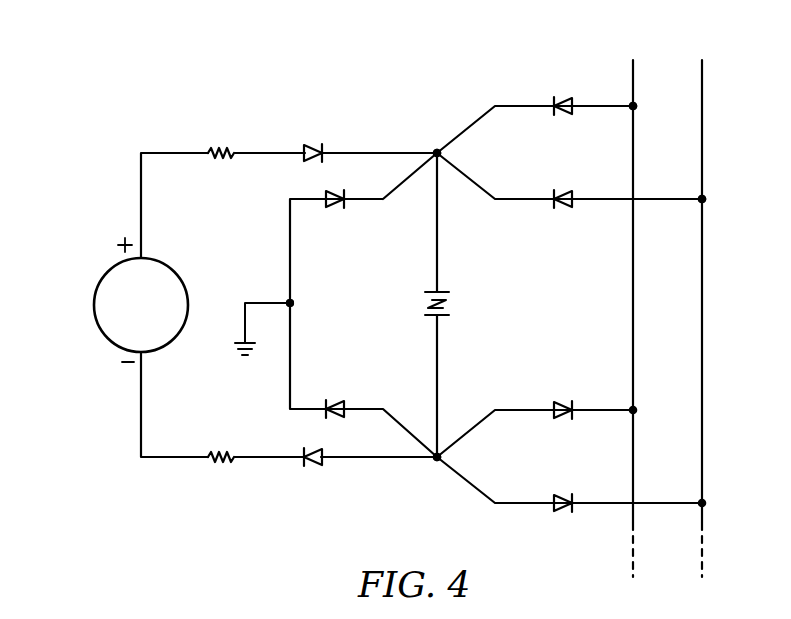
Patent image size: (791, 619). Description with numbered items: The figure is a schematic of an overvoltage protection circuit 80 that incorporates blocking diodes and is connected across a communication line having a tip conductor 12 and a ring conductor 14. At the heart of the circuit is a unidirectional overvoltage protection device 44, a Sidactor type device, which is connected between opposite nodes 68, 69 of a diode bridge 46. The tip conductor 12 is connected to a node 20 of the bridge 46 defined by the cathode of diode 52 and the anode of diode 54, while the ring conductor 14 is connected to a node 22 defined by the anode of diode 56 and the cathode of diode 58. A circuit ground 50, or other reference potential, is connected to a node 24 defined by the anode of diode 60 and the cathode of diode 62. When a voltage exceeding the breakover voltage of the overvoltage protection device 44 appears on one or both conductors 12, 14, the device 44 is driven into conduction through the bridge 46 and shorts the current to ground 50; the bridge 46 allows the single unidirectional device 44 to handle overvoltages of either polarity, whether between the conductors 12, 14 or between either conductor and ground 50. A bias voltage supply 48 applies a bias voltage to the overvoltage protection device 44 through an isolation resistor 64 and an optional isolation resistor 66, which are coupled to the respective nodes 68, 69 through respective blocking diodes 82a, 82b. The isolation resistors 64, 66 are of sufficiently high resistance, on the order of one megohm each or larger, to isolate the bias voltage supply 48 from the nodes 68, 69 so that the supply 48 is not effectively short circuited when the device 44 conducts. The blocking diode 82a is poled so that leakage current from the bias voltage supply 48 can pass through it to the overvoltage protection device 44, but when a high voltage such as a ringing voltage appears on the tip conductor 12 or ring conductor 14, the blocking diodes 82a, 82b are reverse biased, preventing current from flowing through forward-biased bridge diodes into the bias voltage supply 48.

The overvoltage protection circuit 80 is at (190, 60).
The diode bridge 46 is at (512, 80).
The bias voltage supply 48 is at (93, 305).
The isolation resistor 64 is at (212, 149).
The optional isolation resistor 66 is at (216, 462).
The blocking diode 82a is at (312, 146).
The blocking diode 82b is at (310, 462).
The diode 60 is at (340, 208).
The diode 62 is at (343, 402).
The node 68 is at (433, 150).
The node 69 is at (435, 461).
The overvoltage protection device 44 is at (450, 305).
The ground 50 is at (255, 301).
The node 24 is at (296, 303).
The diode 52 is at (562, 100).
The diode 54 is at (563, 402).
The diode 56 is at (562, 206).
The diode 58 is at (562, 510).
The tip conductor 12 is at (632, 292).
The ring conductor 14 is at (701, 327).
The node 20 is at (640, 105).
The node 22 is at (706, 198).